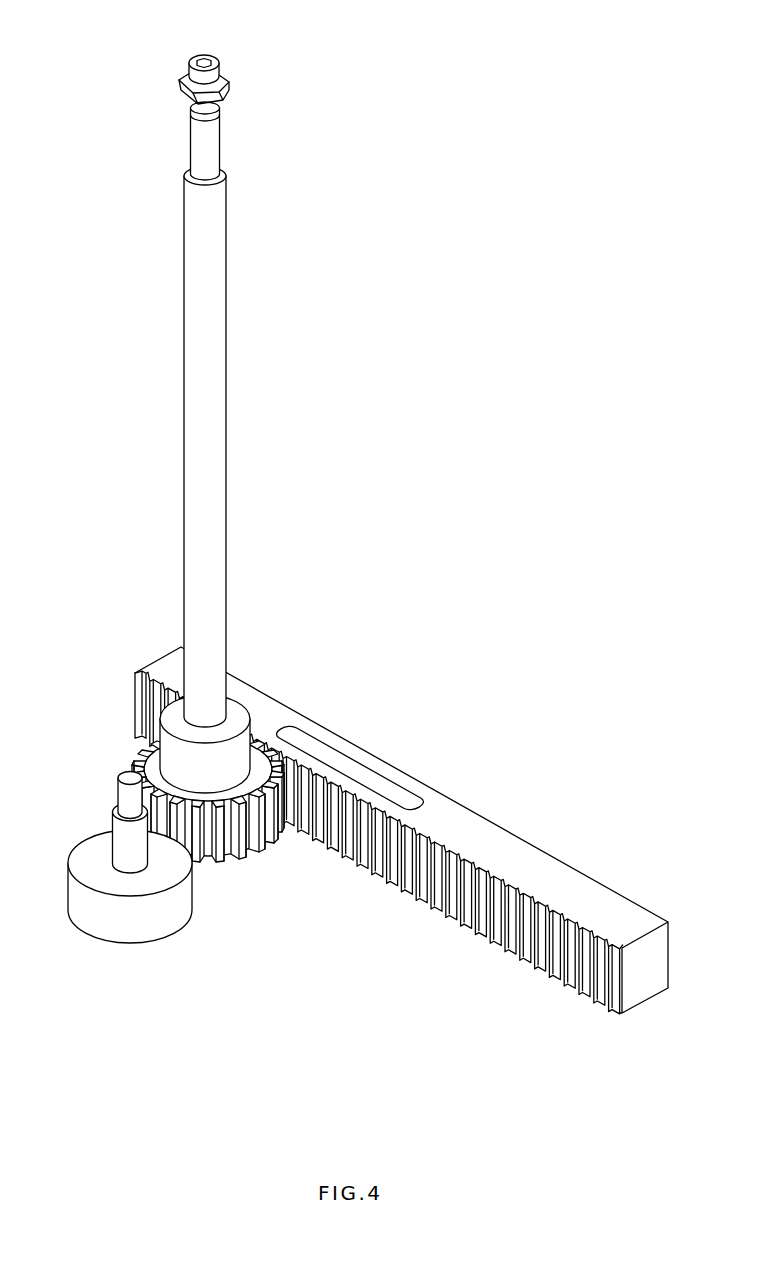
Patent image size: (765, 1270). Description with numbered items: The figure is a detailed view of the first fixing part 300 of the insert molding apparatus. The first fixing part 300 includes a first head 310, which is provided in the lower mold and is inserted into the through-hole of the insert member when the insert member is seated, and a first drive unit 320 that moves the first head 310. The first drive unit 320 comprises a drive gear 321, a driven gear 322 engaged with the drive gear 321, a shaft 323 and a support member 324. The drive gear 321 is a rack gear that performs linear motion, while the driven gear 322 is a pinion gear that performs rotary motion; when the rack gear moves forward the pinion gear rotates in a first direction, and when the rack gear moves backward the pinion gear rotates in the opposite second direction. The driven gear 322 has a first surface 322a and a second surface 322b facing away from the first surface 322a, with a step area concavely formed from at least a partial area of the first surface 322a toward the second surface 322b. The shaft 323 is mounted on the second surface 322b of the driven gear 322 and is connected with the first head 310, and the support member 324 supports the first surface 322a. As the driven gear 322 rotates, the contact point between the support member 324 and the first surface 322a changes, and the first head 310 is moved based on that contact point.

The first fixing part 300 is at (115, 23).
The first head 310 is at (228, 81).
The first drive unit 320 is at (172, 363).
The drive gear 321 is at (512, 958).
The driven gear 322 is at (171, 818).
The first surface 322a is at (216, 866).
The second surface 322b is at (143, 751).
The shaft 323 is at (212, 464).
The support member 324 is at (160, 925).